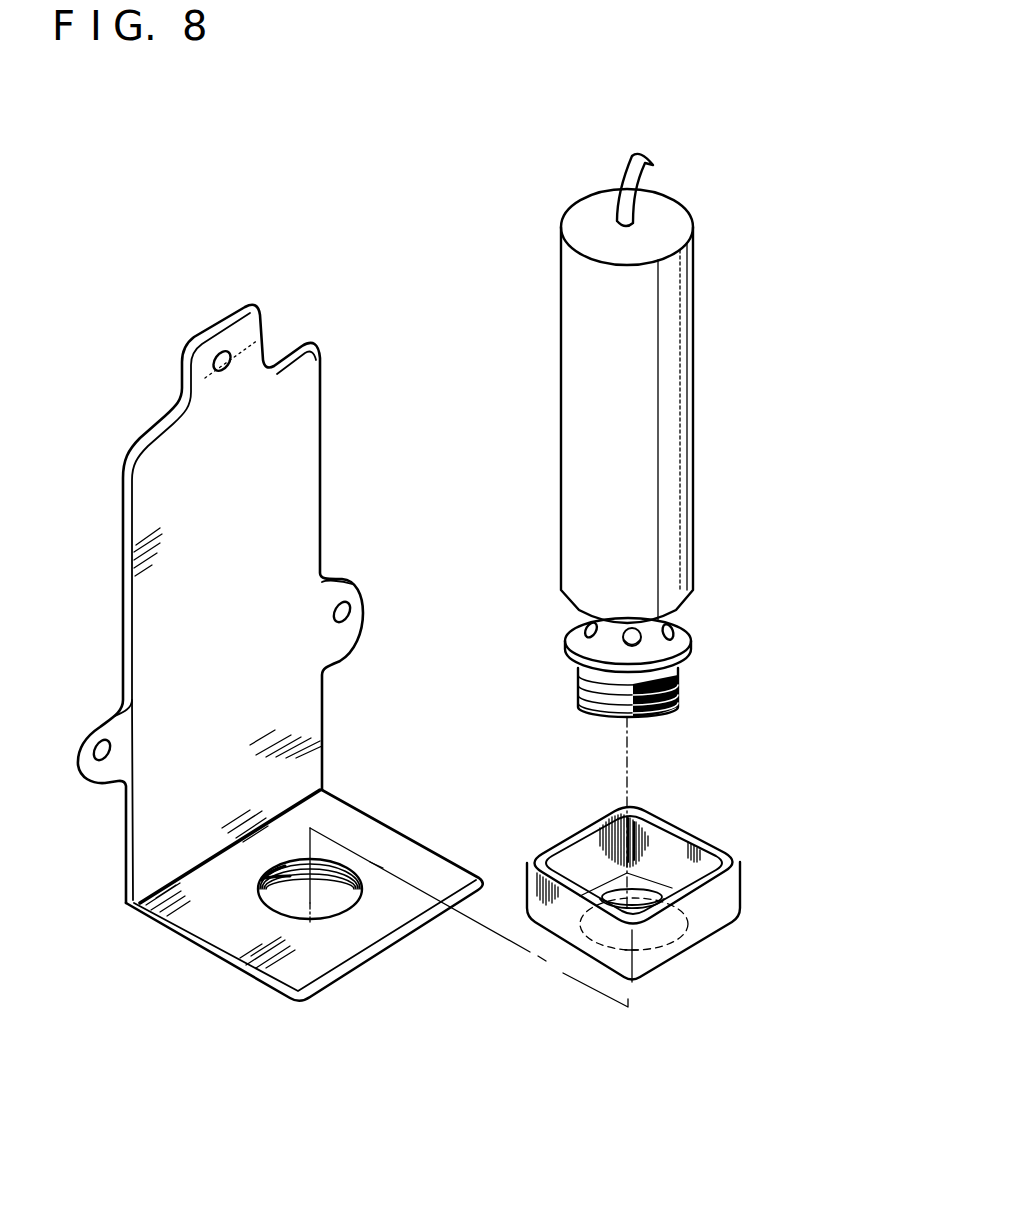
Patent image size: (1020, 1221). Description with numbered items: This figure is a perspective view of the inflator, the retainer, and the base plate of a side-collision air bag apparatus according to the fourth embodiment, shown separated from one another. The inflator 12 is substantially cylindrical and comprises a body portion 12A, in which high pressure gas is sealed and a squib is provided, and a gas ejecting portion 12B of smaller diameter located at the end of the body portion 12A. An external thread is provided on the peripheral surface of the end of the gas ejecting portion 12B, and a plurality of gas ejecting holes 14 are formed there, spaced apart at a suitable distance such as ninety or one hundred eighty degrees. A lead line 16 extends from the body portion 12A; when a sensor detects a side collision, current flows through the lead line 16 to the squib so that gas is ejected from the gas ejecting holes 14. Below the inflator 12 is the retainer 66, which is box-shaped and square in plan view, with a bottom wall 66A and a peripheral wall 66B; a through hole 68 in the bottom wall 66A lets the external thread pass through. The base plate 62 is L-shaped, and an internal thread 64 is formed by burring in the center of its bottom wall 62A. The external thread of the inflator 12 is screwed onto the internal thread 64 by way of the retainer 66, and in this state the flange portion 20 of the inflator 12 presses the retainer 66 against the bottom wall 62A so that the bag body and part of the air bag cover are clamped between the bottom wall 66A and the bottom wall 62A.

The inflator 12 is at (748, 330).
The body portion 12A is at (572, 410).
The gas ejecting portion 12B is at (605, 645).
The gas ejecting holes 14 is at (643, 636).
The lead line 16 is at (632, 174).
The flange portion 20 is at (678, 650).
The base plate 62 is at (297, 326).
The bottom wall 62A is at (205, 920).
The internal thread 64 is at (333, 890).
The retainer 66 is at (760, 874).
The bottom wall 66A is at (652, 880).
The peripheral wall 66B is at (573, 938).
The through hole 68 is at (650, 940).